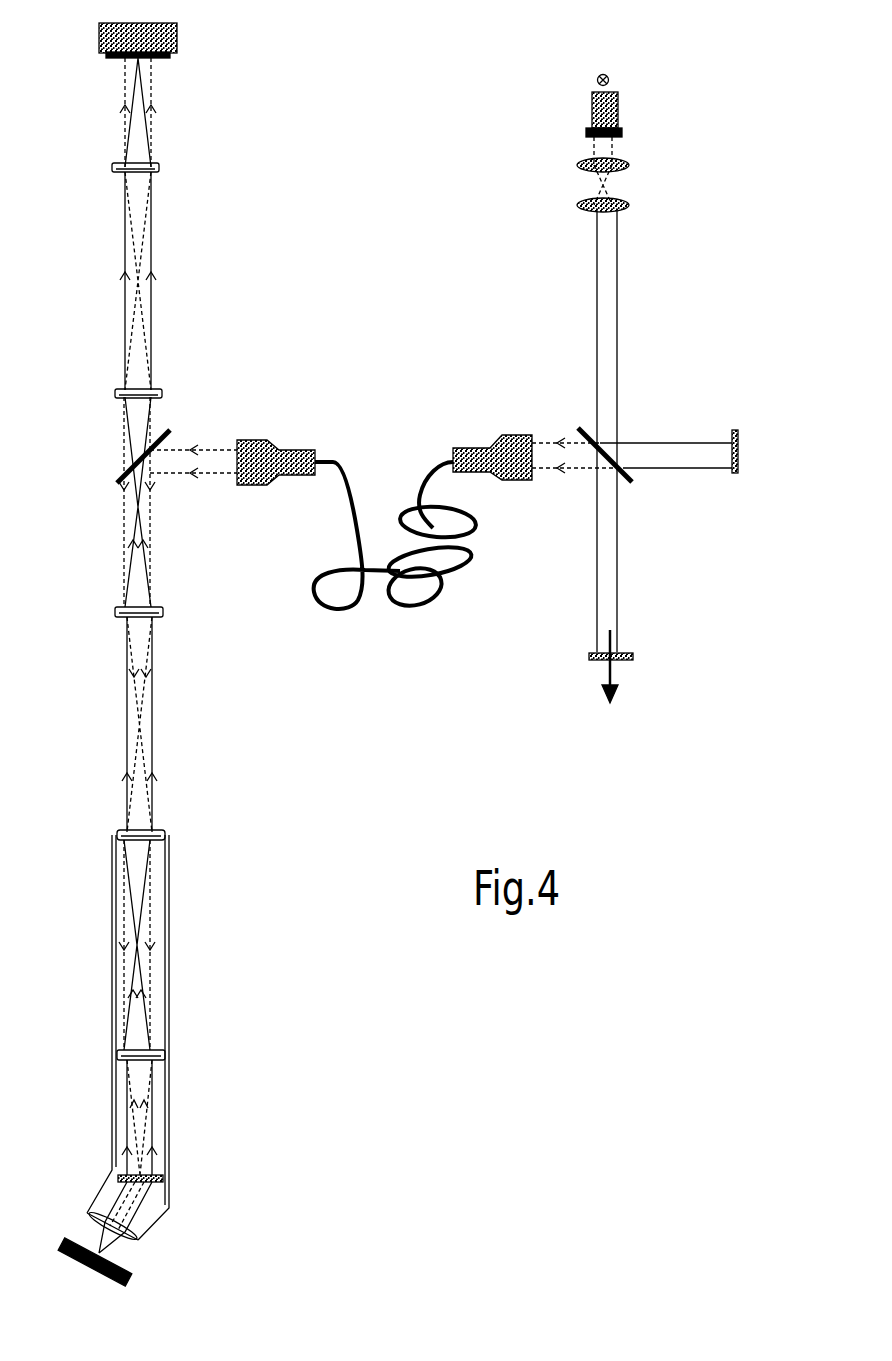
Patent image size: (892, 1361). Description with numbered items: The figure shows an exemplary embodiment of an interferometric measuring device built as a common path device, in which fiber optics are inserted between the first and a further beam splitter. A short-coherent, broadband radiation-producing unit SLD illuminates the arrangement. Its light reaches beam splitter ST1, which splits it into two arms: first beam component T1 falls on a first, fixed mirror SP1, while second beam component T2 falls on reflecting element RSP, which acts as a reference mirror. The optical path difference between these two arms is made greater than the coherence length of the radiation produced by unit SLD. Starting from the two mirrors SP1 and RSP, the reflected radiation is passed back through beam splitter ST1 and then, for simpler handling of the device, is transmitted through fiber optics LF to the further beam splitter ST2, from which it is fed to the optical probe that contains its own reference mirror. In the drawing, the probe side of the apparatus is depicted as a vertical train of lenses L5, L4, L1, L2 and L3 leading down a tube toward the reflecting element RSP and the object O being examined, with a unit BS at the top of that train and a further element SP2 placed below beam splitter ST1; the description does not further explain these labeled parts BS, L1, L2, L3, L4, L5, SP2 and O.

The image sensor / detector BS is at (178, 38).
The lens L5 is at (161, 167).
The lens L4 is at (164, 392).
The further beam splitter ST2 is at (172, 429).
The lens L1 is at (165, 612).
The lens of endoscope tube L2 is at (167, 834).
The lens L3 is at (167, 1055).
The reflecting element RSP is at (176, 1190).
The object O is at (125, 1278).
The fiber optics LF is at (402, 605).
The radiation-producing unit SLD is at (619, 108).
The beam splitter ST1 is at (578, 428).
The first beam component T1 is at (668, 443).
The second beam component T2 is at (620, 572).
The first fixed mirror SP1 is at (739, 440).
The mirror SP2 is at (630, 663).